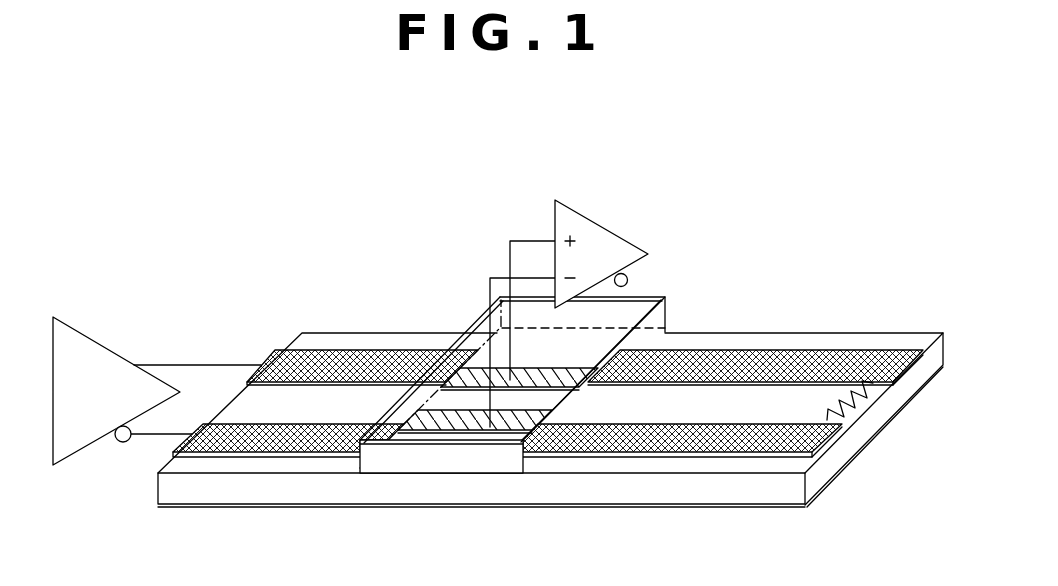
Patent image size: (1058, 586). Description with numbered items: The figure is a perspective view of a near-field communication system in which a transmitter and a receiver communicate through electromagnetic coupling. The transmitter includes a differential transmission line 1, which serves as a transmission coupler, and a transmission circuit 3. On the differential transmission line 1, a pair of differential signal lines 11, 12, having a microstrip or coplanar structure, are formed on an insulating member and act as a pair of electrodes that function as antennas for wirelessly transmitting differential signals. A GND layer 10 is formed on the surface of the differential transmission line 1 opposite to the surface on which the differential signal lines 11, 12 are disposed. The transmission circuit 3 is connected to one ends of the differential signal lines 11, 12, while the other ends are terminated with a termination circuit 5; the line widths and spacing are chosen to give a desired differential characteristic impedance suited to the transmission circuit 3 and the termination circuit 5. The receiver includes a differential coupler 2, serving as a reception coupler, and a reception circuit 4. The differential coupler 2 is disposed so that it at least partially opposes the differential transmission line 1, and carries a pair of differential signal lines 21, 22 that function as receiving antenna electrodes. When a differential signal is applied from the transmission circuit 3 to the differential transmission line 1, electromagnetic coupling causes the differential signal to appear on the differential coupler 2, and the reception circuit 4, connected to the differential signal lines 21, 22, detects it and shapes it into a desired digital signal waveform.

The differential transmission line 1 is at (757, 487).
The GND layer 10 is at (516, 412).
The differential signal line 11 is at (685, 447).
The differential signal line 12 is at (780, 360).
The differential coupler 2 is at (542, 420).
The differential signal line 21 is at (447, 418).
The differential signal line 22 is at (477, 377).
The transmission circuit 3 is at (90, 337).
The reception circuit 4 is at (604, 224).
The termination circuit 5 is at (867, 400).